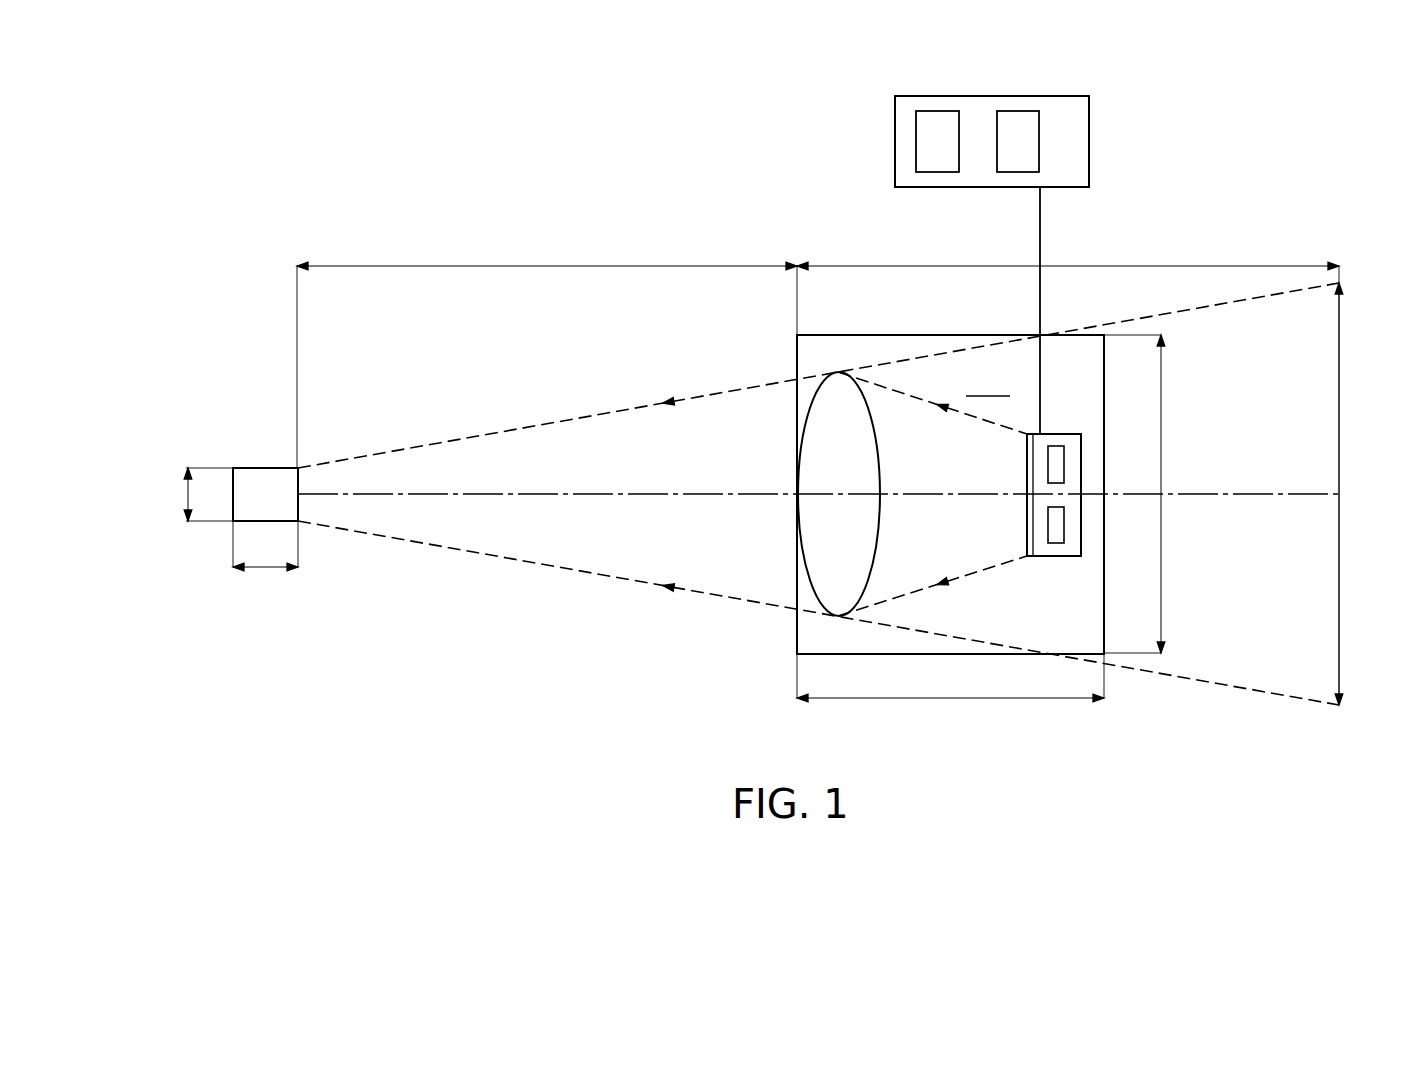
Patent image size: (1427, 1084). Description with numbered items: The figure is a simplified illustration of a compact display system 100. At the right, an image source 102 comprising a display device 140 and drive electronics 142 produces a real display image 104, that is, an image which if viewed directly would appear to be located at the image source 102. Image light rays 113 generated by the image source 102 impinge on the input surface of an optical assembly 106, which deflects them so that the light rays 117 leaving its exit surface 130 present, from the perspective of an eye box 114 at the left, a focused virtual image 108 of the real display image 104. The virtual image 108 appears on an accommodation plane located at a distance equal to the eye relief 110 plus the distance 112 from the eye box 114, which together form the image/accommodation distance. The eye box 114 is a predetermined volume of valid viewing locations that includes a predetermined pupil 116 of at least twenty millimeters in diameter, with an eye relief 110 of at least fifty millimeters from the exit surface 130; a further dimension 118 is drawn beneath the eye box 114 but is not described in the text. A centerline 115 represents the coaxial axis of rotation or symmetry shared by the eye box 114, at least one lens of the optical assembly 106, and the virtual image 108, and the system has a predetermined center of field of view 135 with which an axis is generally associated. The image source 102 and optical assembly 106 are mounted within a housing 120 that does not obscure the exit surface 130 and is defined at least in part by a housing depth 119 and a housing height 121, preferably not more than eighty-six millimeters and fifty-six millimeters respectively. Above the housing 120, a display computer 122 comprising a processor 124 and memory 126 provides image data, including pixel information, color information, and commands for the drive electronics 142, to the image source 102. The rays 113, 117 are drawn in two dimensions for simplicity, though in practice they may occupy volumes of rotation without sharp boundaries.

The compact display system 100 is at (988, 384).
The image source 102 is at (1073, 548).
The real display image 104 is at (1028, 558).
The optical assembly 106 is at (816, 549).
The virtual image 108 is at (1339, 612).
The eye relief 110 is at (417, 266).
The distance 112 is at (860, 266).
The image light rays 113 is at (975, 418).
The eye box 114 is at (257, 490).
The centerline 115 is at (580, 496).
The predetermined pupil 116 is at (187, 493).
The light rays 117 is at (604, 413).
The object width 118 is at (266, 569).
The housing depth 119 is at (912, 699).
The housing 120 is at (953, 655).
The housing height 121 is at (1161, 397).
The display computer 122 is at (1089, 142).
The processor 124 is at (936, 111).
The memory 126 is at (1018, 111).
The exit surface 130 is at (798, 462).
The center of field of view 135 is at (1338, 492).
The display device 140 is at (1064, 463).
The drive electronics 142 is at (1064, 525).